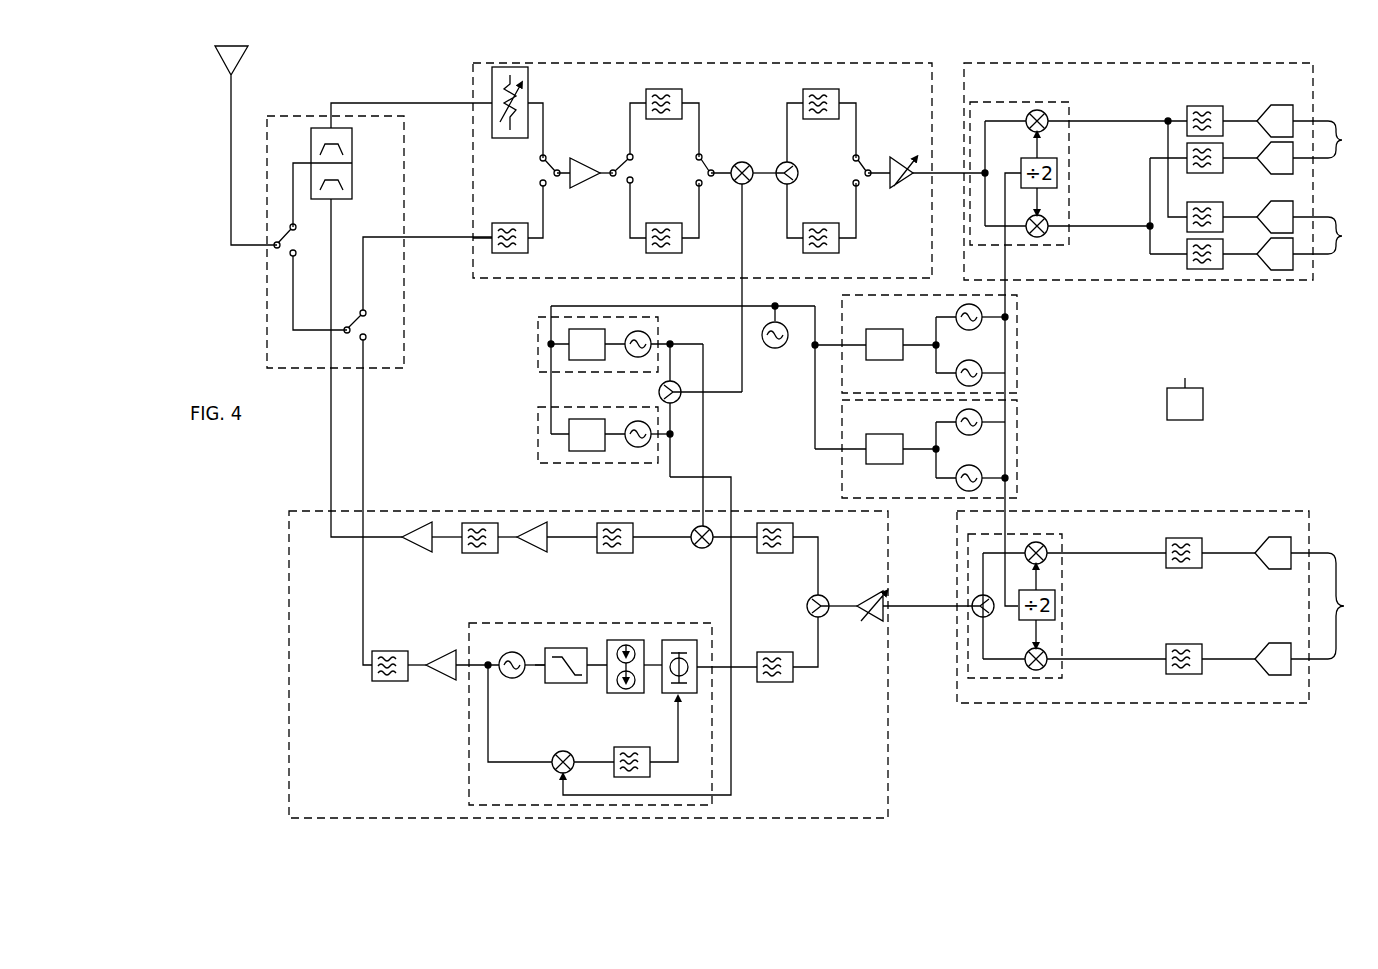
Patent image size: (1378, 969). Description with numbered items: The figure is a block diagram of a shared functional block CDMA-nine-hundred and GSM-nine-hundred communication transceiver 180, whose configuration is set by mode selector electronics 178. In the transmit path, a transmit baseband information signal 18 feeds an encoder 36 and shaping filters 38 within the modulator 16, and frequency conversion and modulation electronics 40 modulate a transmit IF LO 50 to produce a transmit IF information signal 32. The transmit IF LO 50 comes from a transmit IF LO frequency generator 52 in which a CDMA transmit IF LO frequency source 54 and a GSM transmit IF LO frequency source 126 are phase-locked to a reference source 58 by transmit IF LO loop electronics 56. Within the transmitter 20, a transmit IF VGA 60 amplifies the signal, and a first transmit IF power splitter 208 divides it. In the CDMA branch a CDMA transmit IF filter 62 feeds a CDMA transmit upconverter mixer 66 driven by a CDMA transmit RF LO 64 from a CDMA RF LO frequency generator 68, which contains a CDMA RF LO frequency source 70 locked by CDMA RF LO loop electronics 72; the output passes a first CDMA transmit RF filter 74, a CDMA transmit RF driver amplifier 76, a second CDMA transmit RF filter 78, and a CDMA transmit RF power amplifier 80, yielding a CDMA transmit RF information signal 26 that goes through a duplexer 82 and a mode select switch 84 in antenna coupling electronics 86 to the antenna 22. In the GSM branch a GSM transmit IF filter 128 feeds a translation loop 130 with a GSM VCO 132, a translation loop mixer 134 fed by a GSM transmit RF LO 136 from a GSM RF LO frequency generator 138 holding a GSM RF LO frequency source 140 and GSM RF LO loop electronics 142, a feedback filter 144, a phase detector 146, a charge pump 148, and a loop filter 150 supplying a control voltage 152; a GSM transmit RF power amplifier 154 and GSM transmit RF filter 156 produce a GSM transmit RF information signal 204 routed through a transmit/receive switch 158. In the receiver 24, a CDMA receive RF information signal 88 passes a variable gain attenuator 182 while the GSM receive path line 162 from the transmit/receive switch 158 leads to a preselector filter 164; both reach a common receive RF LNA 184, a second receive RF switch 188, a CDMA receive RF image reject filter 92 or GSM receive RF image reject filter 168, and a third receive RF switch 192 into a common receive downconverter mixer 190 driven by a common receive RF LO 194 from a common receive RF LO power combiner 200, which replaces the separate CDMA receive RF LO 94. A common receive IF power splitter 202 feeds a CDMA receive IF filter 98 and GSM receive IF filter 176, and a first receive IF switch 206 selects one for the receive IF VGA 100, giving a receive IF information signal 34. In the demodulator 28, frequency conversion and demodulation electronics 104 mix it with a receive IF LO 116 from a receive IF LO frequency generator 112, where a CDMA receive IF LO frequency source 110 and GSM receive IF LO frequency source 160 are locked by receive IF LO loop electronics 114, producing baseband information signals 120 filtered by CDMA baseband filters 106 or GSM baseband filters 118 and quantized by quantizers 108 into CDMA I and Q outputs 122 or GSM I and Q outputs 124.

The modulator 16 is at (1233, 703).
The transmit baseband information signal 18 is at (1345, 606).
The transmitter 20 is at (289, 776).
The antenna 22 is at (216, 60).
The receiver 24 is at (505, 278).
The CDMA transmit RF information signal 26 is at (331, 436).
The demodulator 28 is at (1112, 280).
The transmit IF information signal 32 is at (922, 606).
The receive IF information signal 34 is at (952, 172).
The encoder 36 is at (1278, 569).
The shaping filters 38 is at (1186, 569).
The frequency conversion and modulation electronics 40 is at (1048, 680).
The transmit IF LO 50 is at (1008, 505).
The transmit IF LO frequency generator 52 is at (842, 486).
The CDMA transmit IF LO frequency source 54 is at (985, 415).
The transmit IF LO loop electronics 56 is at (885, 450).
The reference source 58 is at (773, 348).
The transmit IF variable gain amplifier 60 is at (862, 620).
The CDMA transmit IF filter 62 is at (773, 555).
The CDMA transmit RF LO 64 is at (703, 490).
The CDMA transmit upconverter mixer 66 is at (700, 550).
The CDMA RF LO frequency generator 68 is at (538, 352).
The CDMA RF LO frequency source 70 is at (651, 338).
The CDMA RF LO loop electronics 72 is at (588, 344).
The first CDMA transmit RF filter 74 is at (612, 555).
The CDMA transmit RF driver amplifier 76 is at (540, 555).
The second CDMA transmit RF filter 78 is at (478, 555).
The CDMA transmit RF power amplifier 80 is at (425, 555).
The duplexer 82 is at (311, 140).
The mode select switch 84 is at (297, 242).
The antenna coupling electronics 86 is at (267, 358).
The CDMA receive RF information signal 88 is at (440, 103).
The CDMA receive RF image reject filter 92 is at (664, 119).
The CDMA receive RF LO 94 is at (536, 176).
The CDMA receive IF filter 98 is at (822, 119).
The receive IF VGA 100 is at (895, 160).
The frequency conversion and demodulation electronics 104 is at (1050, 100).
The CDMA baseband filters 106 is at (1207, 173).
The quantizers 108 is at (1278, 270).
The CDMA receive IF LO frequency source 110 is at (985, 325).
The receive IF LO frequency generator 112 is at (842, 300).
The receive IF LO loop electronics 114 is at (885, 345).
The receive IF LO 116 is at (1010, 315).
The GSM baseband filters 118 is at (1205, 269).
The baseband information signals 120 is at (1084, 227).
The CDMA I and Q outputs 122 is at (1351, 139).
The GSM I and Q outputs 124 is at (1351, 235).
The GSM transmit IF LO frequency source 126 is at (985, 472).
The GSM transmit IF filter 128 is at (770, 652).
The translation loop 130 is at (469, 755).
The GSM VCO 132 is at (510, 678).
The translation loop mixer 134 is at (568, 750).
The GSM transmit RF LO 136 is at (731, 490).
The GSM RF LO frequency generator 138 is at (538, 444).
The GSM RF LO frequency source 140 is at (636, 447).
The GSM RF LO loop electronics 142 is at (588, 435).
The feedback filter 144 is at (635, 747).
The phase detector 146 is at (676, 640).
The charge pump 148 is at (623, 640).
The loop filter 150 is at (553, 683).
The control voltage 152 is at (540, 664).
The GSM transmit RF power amplifier 154 is at (446, 652).
The GSM transmit RF filter 156 is at (390, 650).
The transmit/receive switch 158 is at (367, 332).
The GSM receive IF LO frequency source 160 is at (985, 378).
The transmit path line 162 is at (437, 240).
The preselector filter 164 is at (510, 223).
The GSM receive RF image reject filter 168 is at (660, 223).
The GSM receive IF filter 176 is at (816, 223).
The mode selector electronics 178 is at (1185, 399).
The CDMA-900 and GSM-900 communication transceiver 180 is at (1050, 750).
The variable gain attenuator 182 is at (528, 80).
The common receive RF LNA 184 is at (592, 160).
The second receive RF switch 188 is at (632, 172).
The common receive downconverter mixer 190 is at (745, 162).
The third receive RF switch 192 is at (699, 180).
The common receive RF LO 194 is at (742, 293).
The common receive RF LO power combiner 200 is at (680, 400).
The common receive IF power splitter 202 is at (798, 175).
The GSM transmit RF information signal 204 is at (363, 455).
The first receive IF switch 206 is at (861, 186).
The first transmit IF power splitter 208 is at (826, 596).